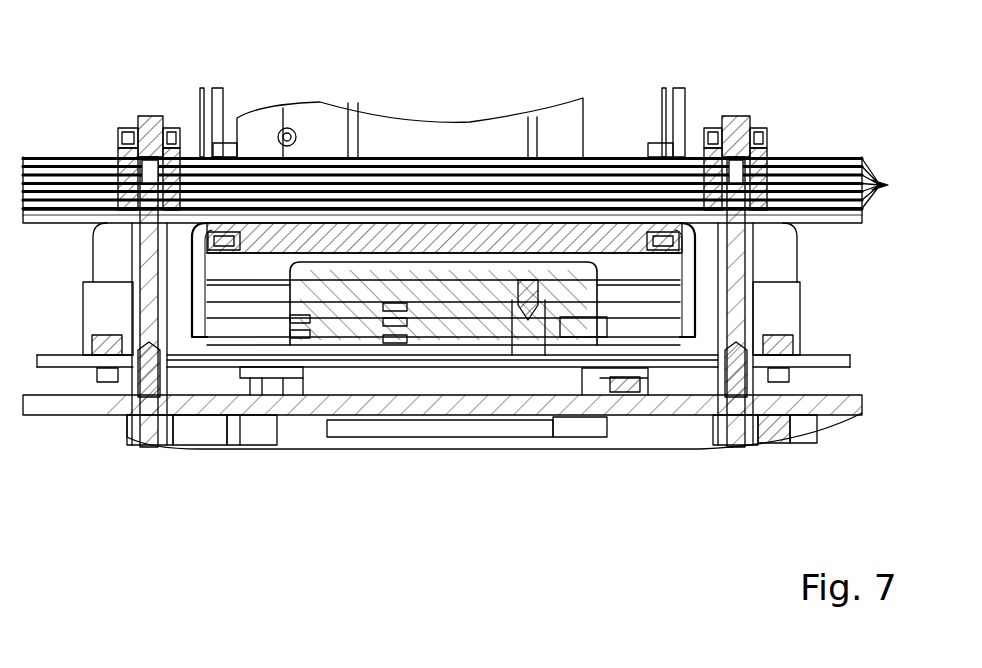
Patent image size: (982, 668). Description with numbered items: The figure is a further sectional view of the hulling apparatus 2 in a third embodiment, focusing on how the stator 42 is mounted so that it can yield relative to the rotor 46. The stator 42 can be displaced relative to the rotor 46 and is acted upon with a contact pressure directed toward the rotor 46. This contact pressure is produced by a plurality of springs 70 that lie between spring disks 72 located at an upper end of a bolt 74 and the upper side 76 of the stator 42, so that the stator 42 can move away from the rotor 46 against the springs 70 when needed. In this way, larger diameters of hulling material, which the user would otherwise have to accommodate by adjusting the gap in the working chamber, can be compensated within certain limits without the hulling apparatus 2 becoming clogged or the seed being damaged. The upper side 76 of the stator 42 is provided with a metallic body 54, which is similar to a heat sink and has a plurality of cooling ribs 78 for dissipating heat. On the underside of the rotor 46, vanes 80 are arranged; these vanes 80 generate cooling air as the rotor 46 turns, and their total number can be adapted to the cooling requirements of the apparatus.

The hulling apparatus 2 is at (562, 448).
The stator 42 is at (262, 247).
The rotor 46 is at (213, 343).
The metallic body 54 is at (807, 157).
The spring 70 is at (170, 128).
The spring disk 72 is at (131, 128).
The bolt 74 is at (153, 268).
The upper side 76 is at (50, 215).
The cooling rib 78 is at (893, 184).
The vane 80 is at (583, 380).